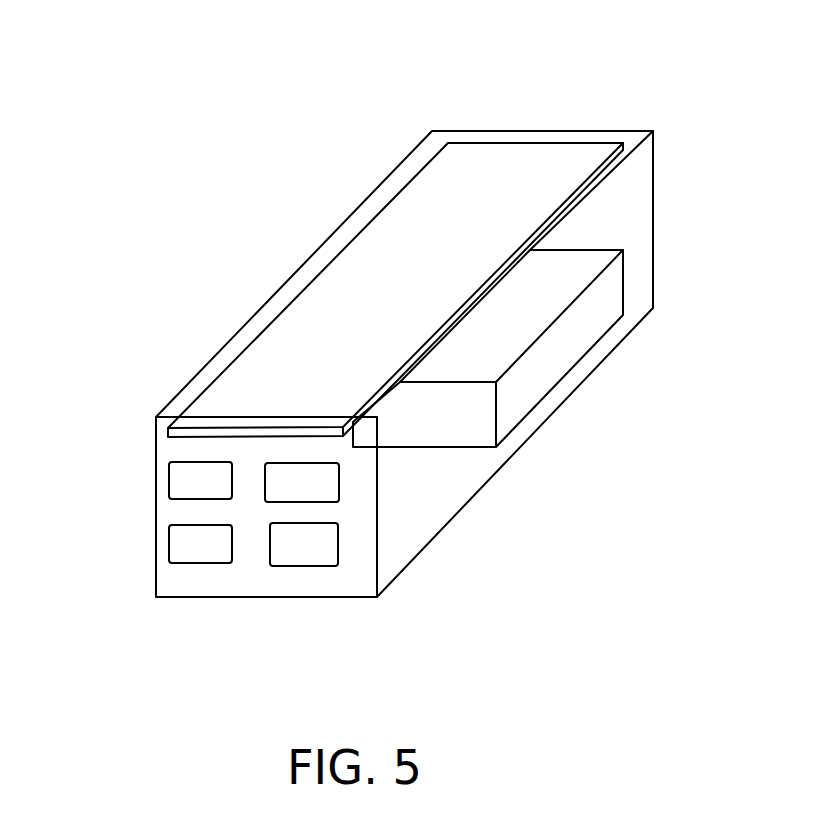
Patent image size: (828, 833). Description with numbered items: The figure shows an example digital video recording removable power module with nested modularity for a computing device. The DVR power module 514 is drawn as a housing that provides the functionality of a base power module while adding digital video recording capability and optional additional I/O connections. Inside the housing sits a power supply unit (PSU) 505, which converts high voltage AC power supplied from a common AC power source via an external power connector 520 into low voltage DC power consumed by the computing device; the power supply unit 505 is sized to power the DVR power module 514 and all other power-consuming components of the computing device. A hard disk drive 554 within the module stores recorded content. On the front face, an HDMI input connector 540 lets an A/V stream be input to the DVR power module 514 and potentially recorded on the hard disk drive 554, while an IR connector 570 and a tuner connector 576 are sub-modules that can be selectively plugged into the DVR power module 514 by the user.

The DVR power module 514 is at (382, 108).
The power supply unit (PSU) 505 is at (500, 214).
The hard disk drive 554 is at (609, 330).
The IR connector 570 is at (190, 461).
The tuner connector 576 is at (339, 484).
The external power connector 520 is at (203, 564).
The HDMI input connector 540 is at (338, 549).